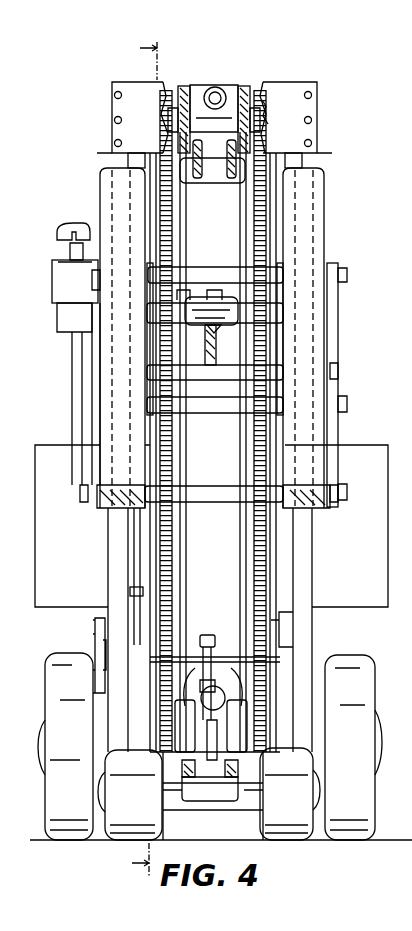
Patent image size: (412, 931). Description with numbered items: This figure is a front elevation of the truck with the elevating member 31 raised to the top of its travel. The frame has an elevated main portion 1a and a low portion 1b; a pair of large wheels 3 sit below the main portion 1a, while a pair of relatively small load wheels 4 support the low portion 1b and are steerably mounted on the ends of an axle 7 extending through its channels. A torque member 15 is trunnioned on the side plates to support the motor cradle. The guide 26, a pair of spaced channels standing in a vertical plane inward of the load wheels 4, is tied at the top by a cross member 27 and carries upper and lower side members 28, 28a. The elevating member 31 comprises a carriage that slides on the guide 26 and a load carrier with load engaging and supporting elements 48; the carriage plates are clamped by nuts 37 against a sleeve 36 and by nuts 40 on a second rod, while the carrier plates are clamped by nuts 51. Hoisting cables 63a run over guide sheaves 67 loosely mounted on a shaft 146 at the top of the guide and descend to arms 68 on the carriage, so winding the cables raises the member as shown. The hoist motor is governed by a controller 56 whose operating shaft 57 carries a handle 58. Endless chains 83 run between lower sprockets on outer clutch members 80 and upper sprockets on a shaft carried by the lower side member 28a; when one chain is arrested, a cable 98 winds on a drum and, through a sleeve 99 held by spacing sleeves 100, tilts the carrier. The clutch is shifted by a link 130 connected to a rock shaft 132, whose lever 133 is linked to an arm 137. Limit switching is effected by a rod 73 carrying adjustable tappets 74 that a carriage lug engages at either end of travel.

The torque member 15 is at (140, 464).
The cross member 27 is at (285, 84).
The shaft 146 is at (264, 122).
The guide sheaves 67 is at (244, 88).
The lower side member 28a is at (230, 183).
The cables 63a is at (232, 225).
The chains 83 is at (248, 564).
The upper side member 28 is at (212, 330).
The load engaging and supporting elements 48 is at (325, 510).
The sleeve 36 is at (213, 504).
The spacing sleeves 100 is at (266, 302).
The sleeve 99 is at (232, 330).
The cable 98 is at (218, 358).
The elevating member 31 is at (345, 385).
The nuts 51 is at (339, 368).
The nuts 40 is at (342, 401).
The nuts 37 is at (346, 490).
The handle 58 is at (70, 228).
The controller 56 is at (52, 283).
The operating shaft 57 is at (72, 386).
The guide 26 is at (312, 558).
The rod 73 is at (134, 539).
The tappets 74 is at (130, 593).
The main frame portion 1a is at (272, 612).
The lever 133 is at (95, 643).
The large wheels 3 is at (360, 649).
The load wheels 4 is at (278, 844).
The low frame portion 1b is at (188, 810).
The axle 7 is at (255, 807).
The arms 68 is at (210, 768).
The rock shaft 132 is at (229, 656).
The arm 137 is at (215, 630).
The link 130 is at (192, 668).
The outer clutch members 80 is at (248, 702).